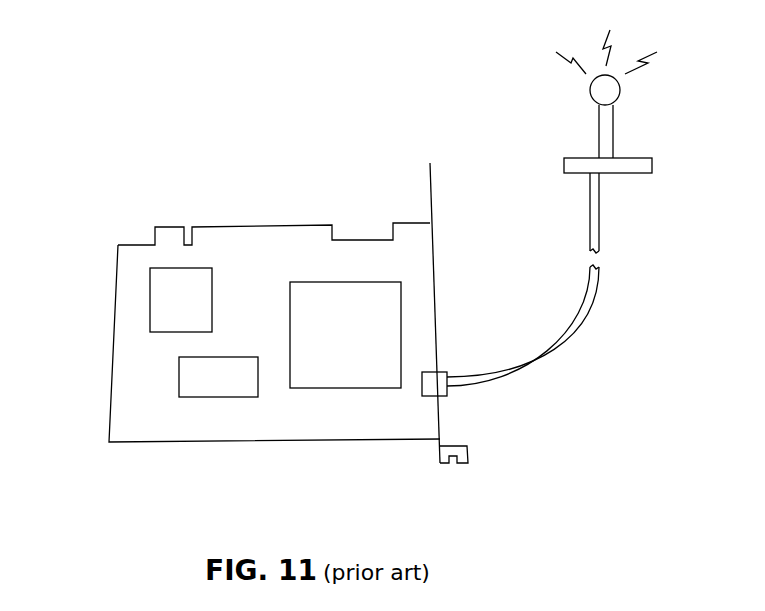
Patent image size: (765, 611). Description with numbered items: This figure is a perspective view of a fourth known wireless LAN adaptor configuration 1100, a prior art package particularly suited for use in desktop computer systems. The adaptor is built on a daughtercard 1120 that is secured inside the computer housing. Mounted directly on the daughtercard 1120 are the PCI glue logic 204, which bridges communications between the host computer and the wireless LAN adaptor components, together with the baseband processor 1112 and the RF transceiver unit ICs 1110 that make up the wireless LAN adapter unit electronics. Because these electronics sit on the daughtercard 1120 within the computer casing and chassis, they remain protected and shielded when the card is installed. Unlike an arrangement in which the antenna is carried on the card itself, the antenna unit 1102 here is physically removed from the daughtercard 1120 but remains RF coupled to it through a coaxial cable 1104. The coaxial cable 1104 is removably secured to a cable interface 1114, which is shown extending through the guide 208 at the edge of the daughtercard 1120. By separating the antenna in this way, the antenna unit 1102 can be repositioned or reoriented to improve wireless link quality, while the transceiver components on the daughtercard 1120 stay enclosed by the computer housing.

The wireless LAN adaptor configuration 1100 is at (381, 289).
The daughtercard 1120 is at (240, 227).
The guide 208 is at (435, 255).
The PCI glue logic 204 is at (163, 288).
The baseband processor 1112 is at (213, 385).
The RF transceiver unit ICs 1110 is at (328, 358).
The cable interface 1114 is at (447, 393).
The coaxial cable 1104 is at (573, 333).
The antenna unit 1102 is at (608, 129).